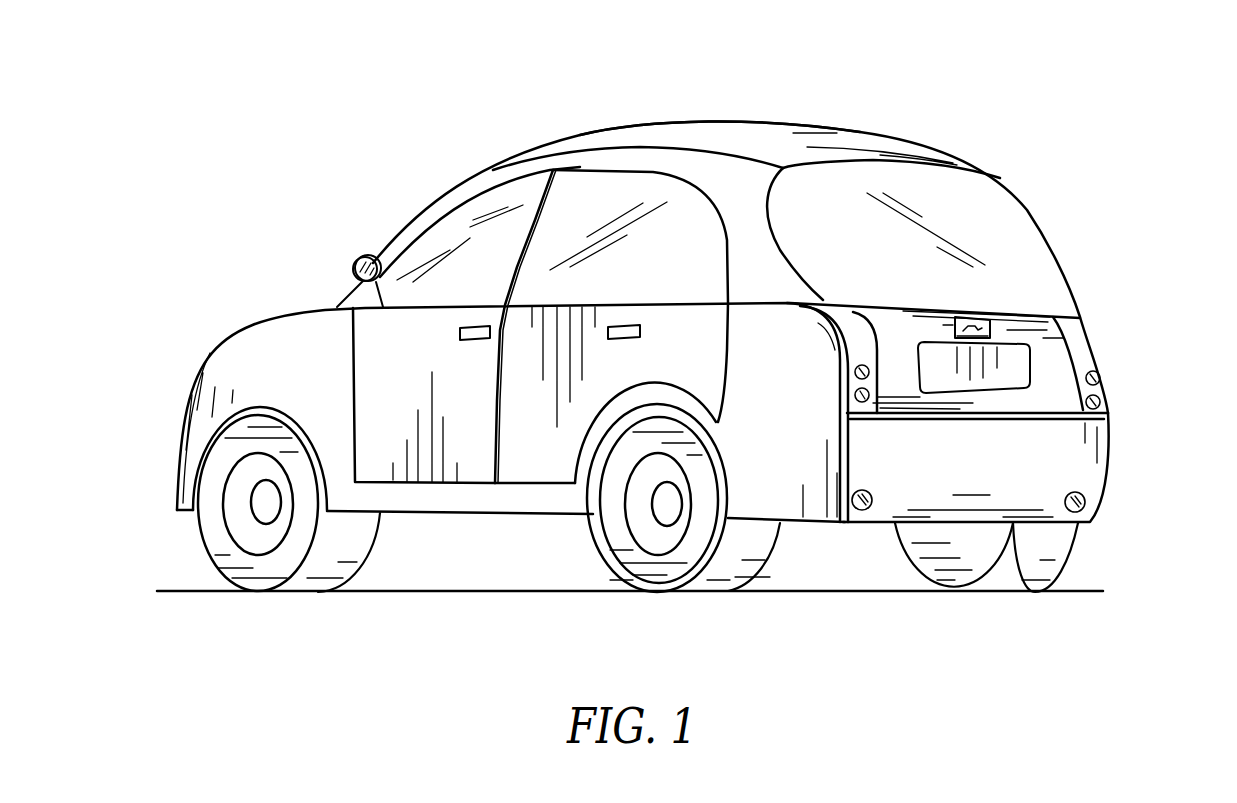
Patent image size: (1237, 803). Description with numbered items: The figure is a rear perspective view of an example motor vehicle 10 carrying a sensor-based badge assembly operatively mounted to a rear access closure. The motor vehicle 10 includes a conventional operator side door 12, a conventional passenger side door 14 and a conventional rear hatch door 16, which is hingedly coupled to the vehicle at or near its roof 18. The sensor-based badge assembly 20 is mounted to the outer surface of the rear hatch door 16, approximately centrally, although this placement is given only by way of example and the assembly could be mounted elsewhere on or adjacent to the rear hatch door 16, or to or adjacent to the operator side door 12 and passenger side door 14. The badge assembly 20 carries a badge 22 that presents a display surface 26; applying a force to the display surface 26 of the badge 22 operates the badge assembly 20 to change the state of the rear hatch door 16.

The motor vehicle 10 is at (1097, 145).
The operator side door 12 is at (390, 383).
The passenger side door 14 is at (547, 457).
The rear hatch door 16 is at (1057, 377).
The roof 18 is at (768, 128).
The sensor-based badge assembly 20 is at (935, 324).
The badge 22 is at (1010, 328).
The display surface 26 is at (975, 330).